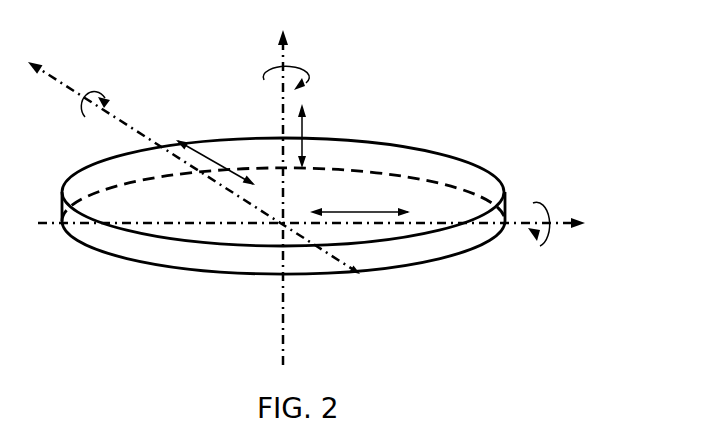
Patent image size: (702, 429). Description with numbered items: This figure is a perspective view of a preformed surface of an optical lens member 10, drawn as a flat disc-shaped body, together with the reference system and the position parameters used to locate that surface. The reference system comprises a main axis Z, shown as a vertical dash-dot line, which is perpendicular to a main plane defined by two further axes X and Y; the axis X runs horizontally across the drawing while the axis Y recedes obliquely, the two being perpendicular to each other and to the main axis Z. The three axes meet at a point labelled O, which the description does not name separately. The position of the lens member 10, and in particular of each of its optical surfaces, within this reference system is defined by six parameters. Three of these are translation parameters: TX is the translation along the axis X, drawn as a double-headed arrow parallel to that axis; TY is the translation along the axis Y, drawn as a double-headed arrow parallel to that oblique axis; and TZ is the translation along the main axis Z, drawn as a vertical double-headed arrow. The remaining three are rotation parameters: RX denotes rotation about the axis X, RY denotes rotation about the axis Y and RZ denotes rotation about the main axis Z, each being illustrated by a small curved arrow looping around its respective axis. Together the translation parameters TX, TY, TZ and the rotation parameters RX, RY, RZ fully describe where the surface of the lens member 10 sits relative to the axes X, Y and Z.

The lens member 10 is at (410, 122).
The axis X is at (318, 212).
The axis Y is at (194, 154).
The main axis Z is at (269, 191).
The origin O is at (292, 200).
The translation parameter TX is at (360, 196).
The translation parameter TY is at (215, 146).
The translation parameter TZ is at (316, 135).
The rotation parameter RX is at (540, 241).
The rotation parameter RY is at (75, 115).
The rotation parameter RZ is at (300, 68).